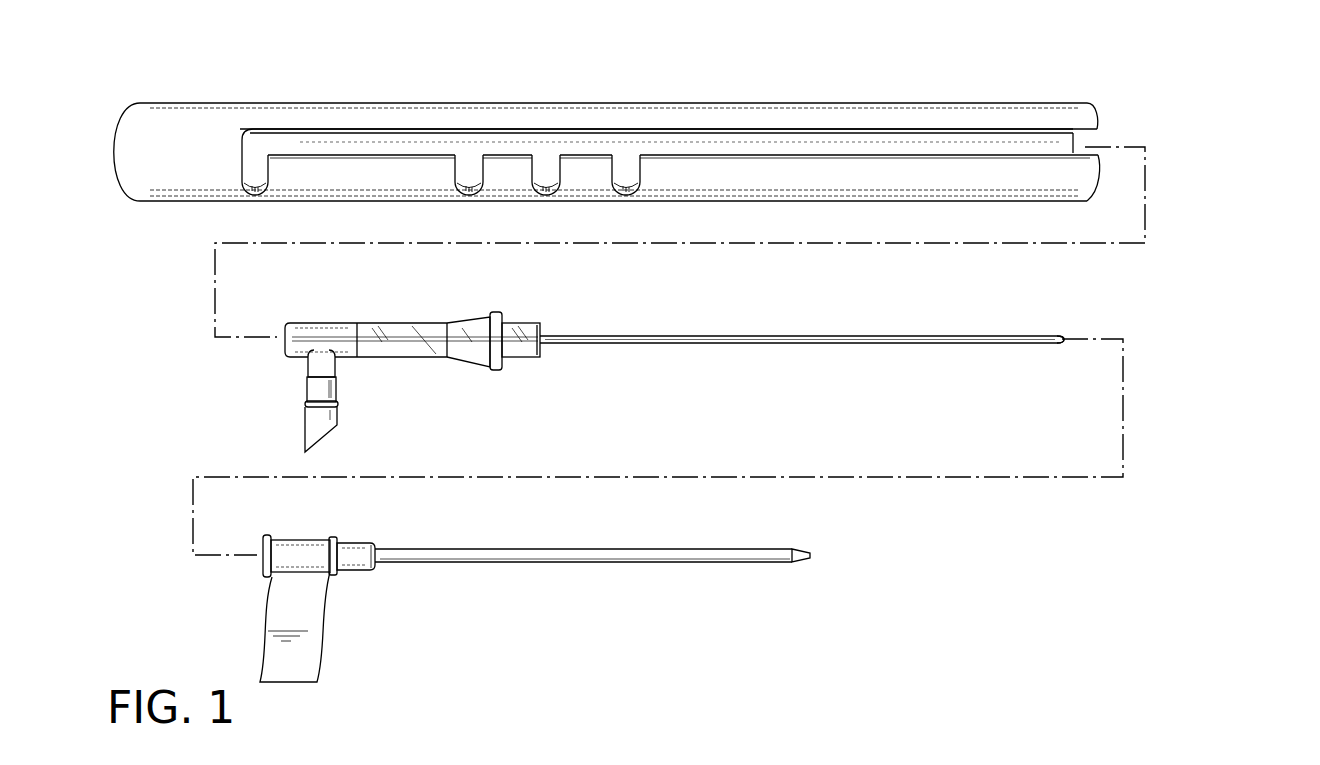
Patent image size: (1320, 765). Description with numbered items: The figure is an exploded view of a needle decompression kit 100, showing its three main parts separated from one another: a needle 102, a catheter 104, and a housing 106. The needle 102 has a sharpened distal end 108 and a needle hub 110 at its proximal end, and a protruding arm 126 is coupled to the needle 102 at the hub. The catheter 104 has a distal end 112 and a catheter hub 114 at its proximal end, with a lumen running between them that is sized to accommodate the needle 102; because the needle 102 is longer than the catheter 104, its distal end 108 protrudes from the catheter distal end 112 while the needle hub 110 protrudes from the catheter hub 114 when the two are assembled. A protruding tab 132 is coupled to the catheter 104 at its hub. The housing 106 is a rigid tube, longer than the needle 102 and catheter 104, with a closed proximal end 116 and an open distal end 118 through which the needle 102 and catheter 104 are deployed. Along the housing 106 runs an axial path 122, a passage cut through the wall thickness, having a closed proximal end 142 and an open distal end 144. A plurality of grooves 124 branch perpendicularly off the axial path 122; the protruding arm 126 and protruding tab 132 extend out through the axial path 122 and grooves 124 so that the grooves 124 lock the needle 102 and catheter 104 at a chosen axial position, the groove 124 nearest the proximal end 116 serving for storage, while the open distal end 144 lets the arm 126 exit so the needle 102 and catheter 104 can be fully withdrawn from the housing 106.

The needle decompression kit 100 is at (1192, 154).
The needle 102 is at (763, 338).
The catheter 104 is at (628, 553).
The housing 106 is at (925, 106).
The sharpened distal end 108 is at (1055, 334).
The needle hub 110 is at (397, 330).
The distal end 112 is at (812, 551).
The catheter hub 114 is at (350, 550).
The closed proximal end 116 is at (115, 150).
The open distal end 118 is at (1095, 112).
The axial path 122 is at (812, 140).
The grooves 124 is at (245, 178).
The protruding arm 126 is at (312, 423).
The protruding tab 132 is at (272, 612).
The closed proximal end 142 is at (237, 152).
The open distal end 144 is at (1087, 141).